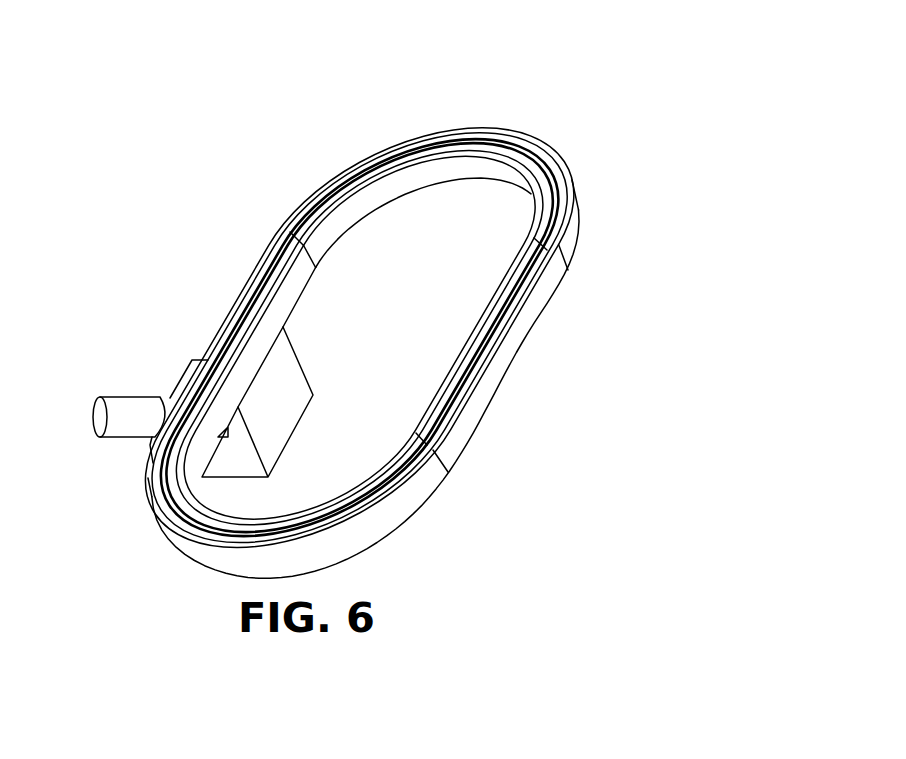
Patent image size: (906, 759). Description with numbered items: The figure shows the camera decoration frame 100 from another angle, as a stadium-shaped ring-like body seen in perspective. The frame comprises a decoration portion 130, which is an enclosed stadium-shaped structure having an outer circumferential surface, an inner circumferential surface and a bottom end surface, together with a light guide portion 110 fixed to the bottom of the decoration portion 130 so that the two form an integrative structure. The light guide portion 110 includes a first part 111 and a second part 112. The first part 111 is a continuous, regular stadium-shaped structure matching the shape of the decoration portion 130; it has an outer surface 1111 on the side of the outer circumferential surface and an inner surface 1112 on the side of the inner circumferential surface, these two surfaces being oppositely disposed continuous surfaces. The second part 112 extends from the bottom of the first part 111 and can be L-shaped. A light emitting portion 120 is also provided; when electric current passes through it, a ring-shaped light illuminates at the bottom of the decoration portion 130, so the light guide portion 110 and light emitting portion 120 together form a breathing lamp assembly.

The camera decoration frame 100 is at (322, 316).
The light guide portion 110 is at (327, 373).
The first part 111 is at (298, 300).
The second part 112 is at (291, 410).
The light emitting portion 120 is at (100, 414).
The decoration portion 130 is at (446, 128).
The outer surface 1111 is at (524, 332).
The inner surface 1112 is at (434, 180).